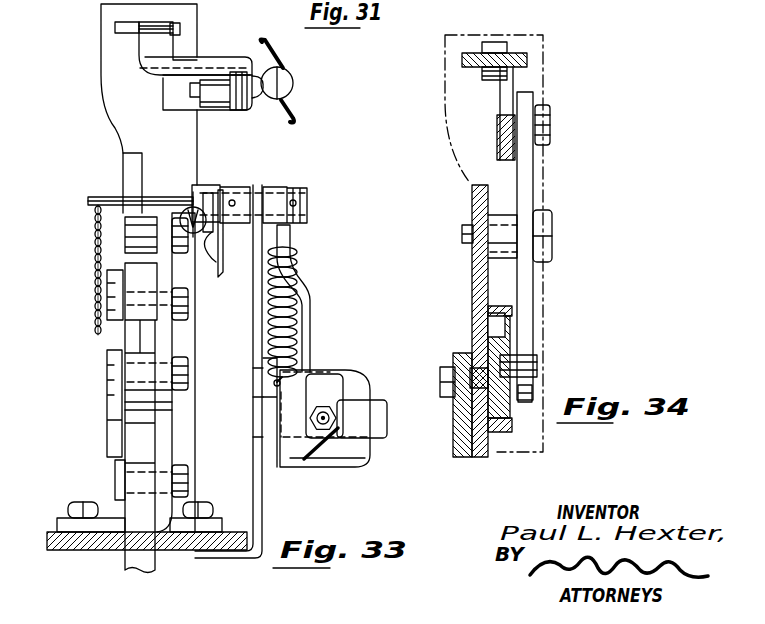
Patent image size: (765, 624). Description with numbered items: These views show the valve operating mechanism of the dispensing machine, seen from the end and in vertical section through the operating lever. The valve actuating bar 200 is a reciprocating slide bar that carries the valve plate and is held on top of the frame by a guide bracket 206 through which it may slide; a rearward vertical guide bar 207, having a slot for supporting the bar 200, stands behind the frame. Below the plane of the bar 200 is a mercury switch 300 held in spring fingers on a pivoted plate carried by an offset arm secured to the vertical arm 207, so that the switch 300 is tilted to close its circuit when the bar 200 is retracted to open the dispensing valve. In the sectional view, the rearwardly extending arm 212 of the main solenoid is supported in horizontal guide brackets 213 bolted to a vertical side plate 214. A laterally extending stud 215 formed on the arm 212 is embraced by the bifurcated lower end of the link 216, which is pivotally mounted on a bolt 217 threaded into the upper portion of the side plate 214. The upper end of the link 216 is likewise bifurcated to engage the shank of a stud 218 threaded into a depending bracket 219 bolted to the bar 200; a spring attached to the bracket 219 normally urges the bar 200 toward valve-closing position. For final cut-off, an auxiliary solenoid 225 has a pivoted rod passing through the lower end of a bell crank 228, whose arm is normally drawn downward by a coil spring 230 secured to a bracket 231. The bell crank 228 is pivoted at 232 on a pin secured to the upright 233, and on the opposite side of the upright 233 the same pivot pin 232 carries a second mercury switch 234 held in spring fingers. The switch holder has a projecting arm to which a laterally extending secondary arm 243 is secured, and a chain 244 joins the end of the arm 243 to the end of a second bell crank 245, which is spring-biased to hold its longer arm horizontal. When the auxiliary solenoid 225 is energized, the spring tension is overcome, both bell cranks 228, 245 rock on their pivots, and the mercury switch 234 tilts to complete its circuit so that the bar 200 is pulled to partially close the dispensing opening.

In FIG. 33, the valve actuating bar 200 is at (125, 33).
In FIG. 34, the valve actuating bar 200 is at (528, 57).
In FIG. 33, the guide bracket 206 is at (198, 12).
In FIG. 33, the rearward vertical guide bar 207 is at (188, 43).
In FIG. 33, the mercury switch 300 is at (294, 76).
In FIG. 33, the laterally extending secondary arm 243 is at (103, 192).
In FIG. 33, the chain 244 is at (97, 258).
In FIG. 33, the pivot pin 232 is at (308, 203).
In FIG. 33, the mercury switch 234 is at (213, 259).
In FIG. 33, the upright 233 is at (253, 356).
In FIG. 33, the coil spring 230 is at (297, 288).
In FIG. 33, the bell crank 228 is at (311, 315).
In FIG. 33, the auxiliary solenoid 225 is at (365, 382).
In FIG. 33, the bracket 231 is at (312, 368).
In FIG. 34, the depending bracket 219 is at (512, 83).
In FIG. 34, the link 216 is at (530, 183).
In FIG. 34, the stud 218 is at (550, 120).
In FIG. 34, the vertical side plate 214 is at (472, 197).
In FIG. 34, the bolt 217 is at (553, 230).
In FIG. 34, the rearwardly extending arm 212 is at (510, 347).
In FIG. 34, the horizontal guide brackets 213 is at (507, 308).
In FIG. 34, the laterally extending stud 215 is at (537, 363).
In FIG. 34, the second bell crank 245 is at (455, 440).